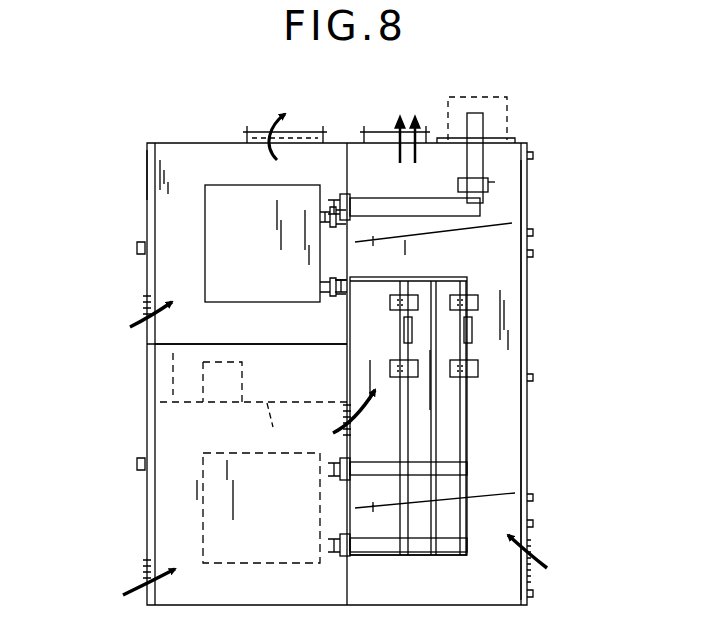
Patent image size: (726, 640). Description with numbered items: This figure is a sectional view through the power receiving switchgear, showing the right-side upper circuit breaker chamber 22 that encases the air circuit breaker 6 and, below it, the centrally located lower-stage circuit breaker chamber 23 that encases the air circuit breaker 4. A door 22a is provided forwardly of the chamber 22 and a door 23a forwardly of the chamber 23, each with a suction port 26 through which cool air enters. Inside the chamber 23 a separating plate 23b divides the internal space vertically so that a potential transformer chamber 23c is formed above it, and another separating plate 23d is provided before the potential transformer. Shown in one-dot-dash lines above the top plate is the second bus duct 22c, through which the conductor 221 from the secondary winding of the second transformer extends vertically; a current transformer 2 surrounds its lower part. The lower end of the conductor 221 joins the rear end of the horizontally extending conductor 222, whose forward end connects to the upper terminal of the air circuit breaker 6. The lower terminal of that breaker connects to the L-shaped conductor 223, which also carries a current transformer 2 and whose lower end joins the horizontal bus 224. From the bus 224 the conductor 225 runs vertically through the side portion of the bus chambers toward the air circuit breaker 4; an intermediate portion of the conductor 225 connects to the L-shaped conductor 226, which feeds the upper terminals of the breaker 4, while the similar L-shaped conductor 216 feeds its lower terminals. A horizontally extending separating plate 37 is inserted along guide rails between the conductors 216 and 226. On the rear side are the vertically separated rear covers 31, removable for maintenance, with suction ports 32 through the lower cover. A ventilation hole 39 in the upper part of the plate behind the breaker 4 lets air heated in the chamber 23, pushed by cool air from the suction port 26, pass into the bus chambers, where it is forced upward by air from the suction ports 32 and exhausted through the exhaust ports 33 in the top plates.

The current transformer 2 is at (488, 182).
The air circuit breaker 4 is at (203, 486).
The air circuit breaker 6 is at (205, 222).
The circuit breaker chamber 22 is at (182, 148).
The door 22a is at (147, 178).
The second bus duct 22c is at (507, 105).
The circuit breaker chamber 23 is at (205, 588).
The door 23a is at (150, 442).
The separating plate 23b is at (284, 429).
The potential transformer chamber 23c is at (283, 360).
The separating plate 23d is at (155, 367).
The suction port 26 is at (147, 305).
The rear cover 31 is at (488, 205).
The suction port 32 is at (527, 572).
The exhaust port 33 is at (265, 130).
The horizontally extending separating plate 37 is at (493, 230).
The ventilation hole 39 is at (345, 412).
The L-shaped conductor 216 is at (388, 556).
The conductor 221 is at (488, 160).
The horizontally extending conductor 222 is at (382, 209).
The L-shaped conductor 223 is at (470, 280).
The horizontal bus 224 is at (472, 330).
The conductor 225 is at (470, 425).
The L-shaped conductor 226 is at (330, 497).